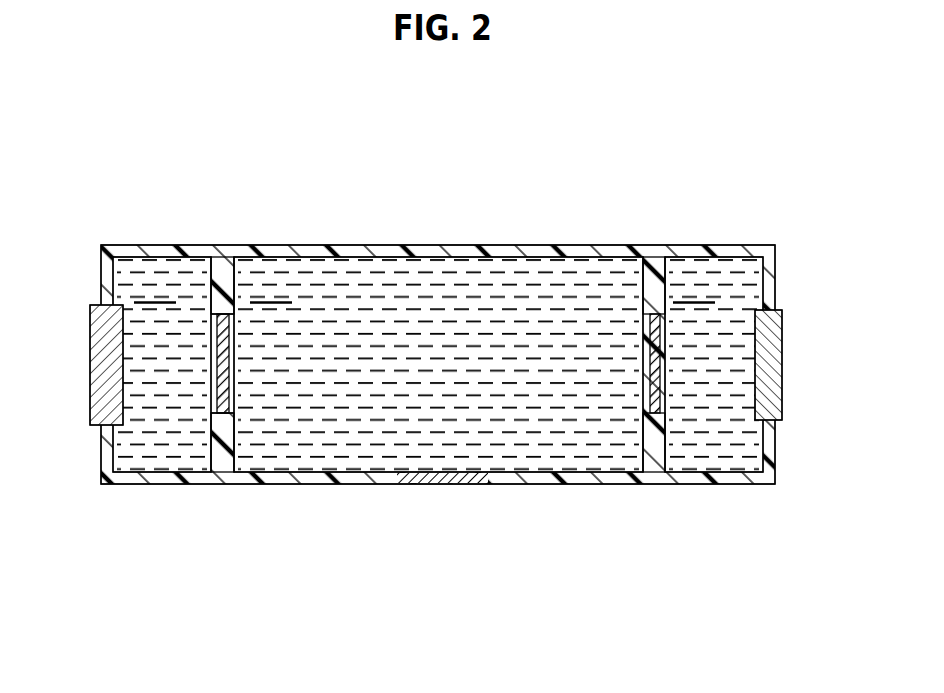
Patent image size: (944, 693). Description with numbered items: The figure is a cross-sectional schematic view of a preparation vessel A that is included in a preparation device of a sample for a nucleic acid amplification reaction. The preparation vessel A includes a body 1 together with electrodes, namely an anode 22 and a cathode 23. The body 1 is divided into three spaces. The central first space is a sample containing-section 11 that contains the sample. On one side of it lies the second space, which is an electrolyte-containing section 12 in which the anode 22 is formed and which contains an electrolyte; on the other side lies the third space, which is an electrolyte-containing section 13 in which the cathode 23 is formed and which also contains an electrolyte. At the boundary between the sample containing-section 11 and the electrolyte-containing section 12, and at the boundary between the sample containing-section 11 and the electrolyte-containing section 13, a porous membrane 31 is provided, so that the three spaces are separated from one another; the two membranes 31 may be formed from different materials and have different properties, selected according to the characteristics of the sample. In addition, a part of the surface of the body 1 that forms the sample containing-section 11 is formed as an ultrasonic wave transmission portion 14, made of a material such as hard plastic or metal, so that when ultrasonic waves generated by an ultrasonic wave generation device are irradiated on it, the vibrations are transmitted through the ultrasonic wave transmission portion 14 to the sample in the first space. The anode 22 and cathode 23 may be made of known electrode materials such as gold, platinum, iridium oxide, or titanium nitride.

The preparation vessel A is at (429, 353).
The body 1 is at (226, 468).
The sample containing-section 11 is at (535, 270).
The electrolyte-containing section 12 is at (157, 452).
The electrolyte-containing section 13 is at (695, 450).
The ultrasonic wave transmission portion 14 is at (445, 483).
The anode 22 is at (96, 305).
The cathode 23 is at (780, 310).
The porous membrane 31 is at (222, 366).